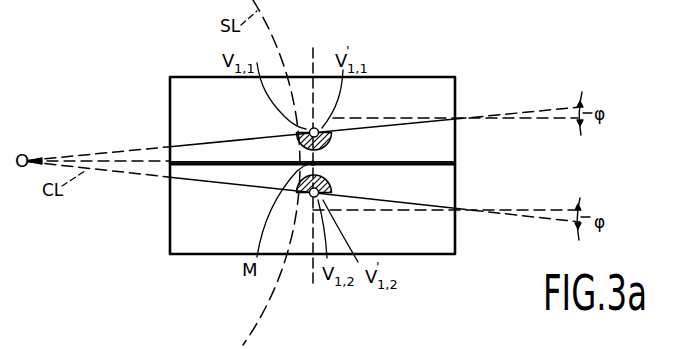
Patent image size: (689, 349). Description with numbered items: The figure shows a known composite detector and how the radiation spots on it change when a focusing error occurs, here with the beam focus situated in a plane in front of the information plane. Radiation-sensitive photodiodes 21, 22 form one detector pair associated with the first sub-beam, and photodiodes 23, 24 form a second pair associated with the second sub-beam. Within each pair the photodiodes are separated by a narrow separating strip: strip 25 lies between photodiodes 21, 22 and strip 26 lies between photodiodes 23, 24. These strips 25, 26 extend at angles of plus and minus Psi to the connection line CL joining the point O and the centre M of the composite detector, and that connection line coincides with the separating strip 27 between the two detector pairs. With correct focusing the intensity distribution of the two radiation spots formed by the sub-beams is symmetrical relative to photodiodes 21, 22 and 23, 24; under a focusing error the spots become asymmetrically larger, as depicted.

The photodiode 21 is at (185, 100).
The photodiode 22 is at (179, 151).
The photodiode 23 is at (184, 170).
The photodiode 24 is at (183, 242).
The separating strip 25 is at (434, 122).
The separating strip 26 is at (432, 204).
The separating strip 27 is at (434, 172).